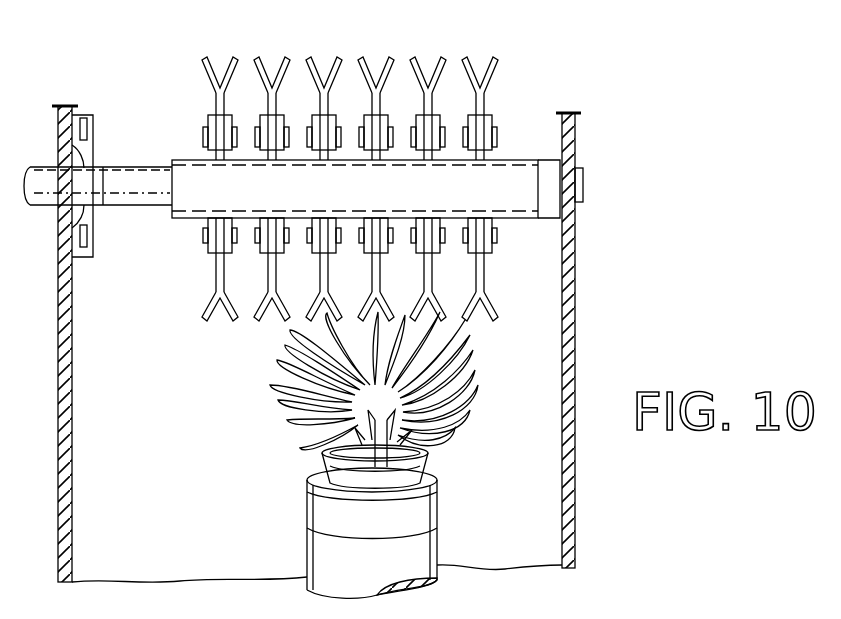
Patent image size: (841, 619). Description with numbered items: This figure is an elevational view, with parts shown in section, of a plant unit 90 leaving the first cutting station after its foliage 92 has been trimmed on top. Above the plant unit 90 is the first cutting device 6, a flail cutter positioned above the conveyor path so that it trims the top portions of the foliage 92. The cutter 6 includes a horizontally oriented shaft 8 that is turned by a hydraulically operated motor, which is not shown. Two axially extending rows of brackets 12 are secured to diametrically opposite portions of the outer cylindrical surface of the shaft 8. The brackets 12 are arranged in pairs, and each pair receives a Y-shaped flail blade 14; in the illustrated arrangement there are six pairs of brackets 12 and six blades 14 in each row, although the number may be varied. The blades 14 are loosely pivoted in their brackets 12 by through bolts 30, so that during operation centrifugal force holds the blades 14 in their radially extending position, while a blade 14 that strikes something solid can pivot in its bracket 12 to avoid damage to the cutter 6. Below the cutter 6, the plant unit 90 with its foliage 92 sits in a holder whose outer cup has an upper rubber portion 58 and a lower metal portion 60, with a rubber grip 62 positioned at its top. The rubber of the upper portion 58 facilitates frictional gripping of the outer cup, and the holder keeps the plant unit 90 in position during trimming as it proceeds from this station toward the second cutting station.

The first cutting device 6 is at (542, 95).
The horizontally oriented shaft 8 is at (455, 189).
The brackets 12 is at (212, 252).
The Y-shaped flail blade 14 is at (213, 318).
The through bolts 30 is at (205, 238).
The upper rubber portion 58 is at (383, 533).
The lower metal portion 60 is at (383, 576).
The rubber grip 62 is at (427, 477).
The plant unit 90 is at (424, 389).
The foliage 92 is at (287, 425).